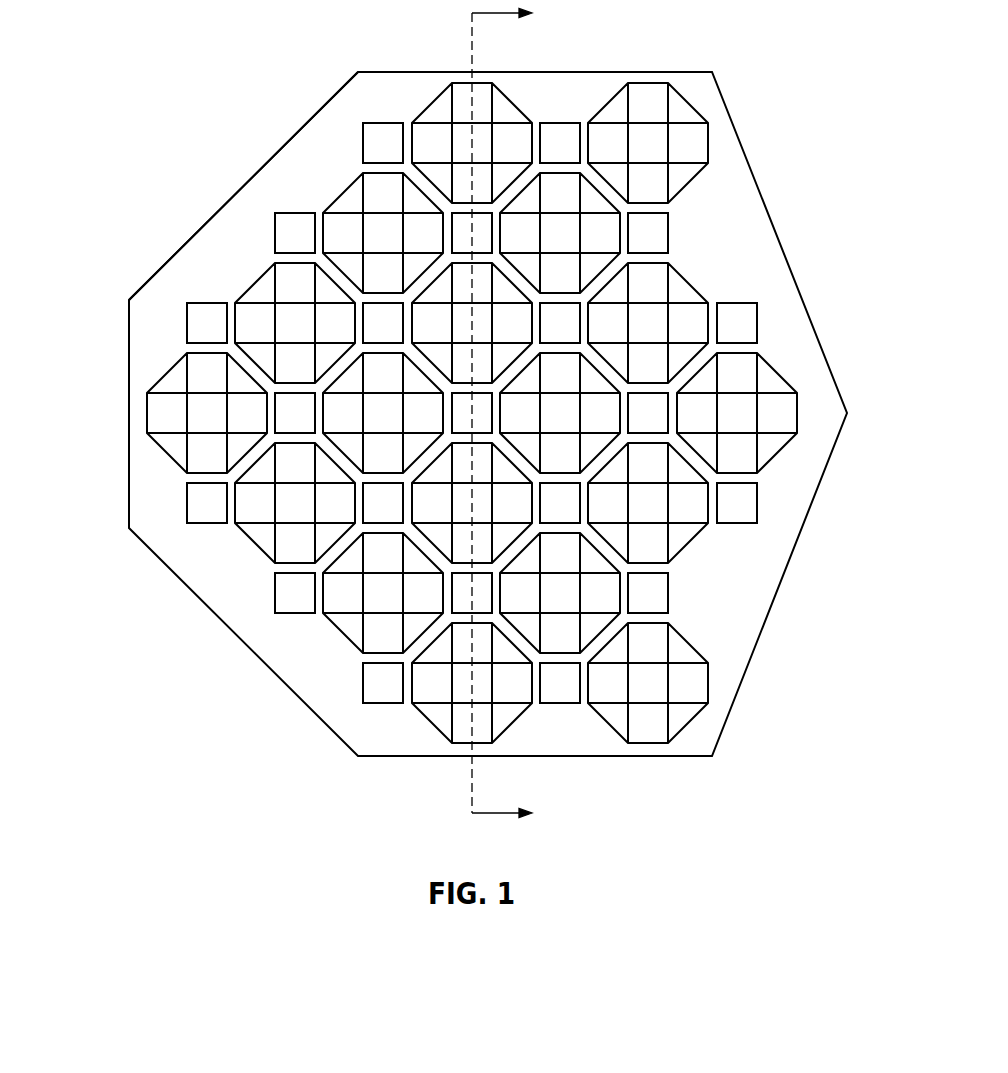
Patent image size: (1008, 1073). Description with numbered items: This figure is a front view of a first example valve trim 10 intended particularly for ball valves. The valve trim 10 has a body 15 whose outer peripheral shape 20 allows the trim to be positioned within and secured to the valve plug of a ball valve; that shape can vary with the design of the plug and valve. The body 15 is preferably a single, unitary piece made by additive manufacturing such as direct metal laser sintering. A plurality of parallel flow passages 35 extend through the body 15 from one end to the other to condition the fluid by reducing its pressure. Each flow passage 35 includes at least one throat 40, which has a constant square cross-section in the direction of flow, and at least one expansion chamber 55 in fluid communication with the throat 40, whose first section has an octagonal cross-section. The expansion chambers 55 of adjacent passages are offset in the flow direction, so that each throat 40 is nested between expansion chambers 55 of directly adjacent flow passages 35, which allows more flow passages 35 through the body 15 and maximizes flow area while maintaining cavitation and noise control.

The valve trim 10 is at (258, 58).
The body 15 is at (730, 228).
The outer peripheral shape 20 is at (268, 152).
The flow passages 35 is at (262, 232).
The throat 40 is at (463, 413).
The expansion chamber 55 is at (158, 455).